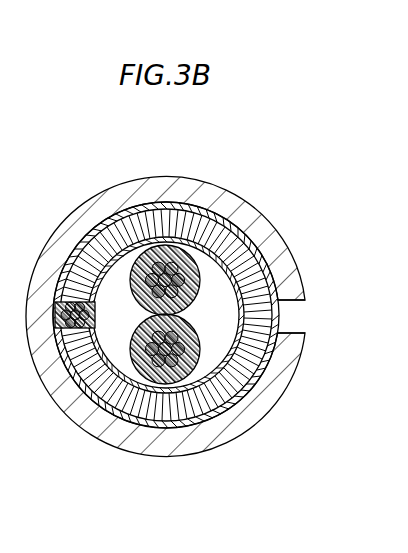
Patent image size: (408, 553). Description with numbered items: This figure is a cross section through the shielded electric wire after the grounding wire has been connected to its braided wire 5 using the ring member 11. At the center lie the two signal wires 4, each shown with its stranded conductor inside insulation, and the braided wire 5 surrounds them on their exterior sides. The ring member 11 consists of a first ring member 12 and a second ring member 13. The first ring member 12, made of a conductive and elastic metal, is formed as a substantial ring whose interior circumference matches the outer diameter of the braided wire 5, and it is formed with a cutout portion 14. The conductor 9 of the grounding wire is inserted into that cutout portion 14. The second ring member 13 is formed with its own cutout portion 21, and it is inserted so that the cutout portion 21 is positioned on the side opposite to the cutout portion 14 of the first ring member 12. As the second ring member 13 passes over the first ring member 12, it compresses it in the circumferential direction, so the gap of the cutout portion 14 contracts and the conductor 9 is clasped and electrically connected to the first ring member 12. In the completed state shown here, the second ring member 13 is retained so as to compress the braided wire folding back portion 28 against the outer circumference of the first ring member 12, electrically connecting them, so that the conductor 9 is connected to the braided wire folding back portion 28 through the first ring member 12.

The signal wire 4 is at (172, 243).
The braided wire 5 is at (200, 400).
The conductor 9 is at (60, 302).
The ring member 11 is at (165, 281).
The first ring member 12 is at (212, 216).
The second ring member 13 is at (250, 220).
The cutout portion 14 is at (70, 355).
The cutout portion 21 is at (297, 301).
The braided wire folding back portion 28 is at (285, 353).